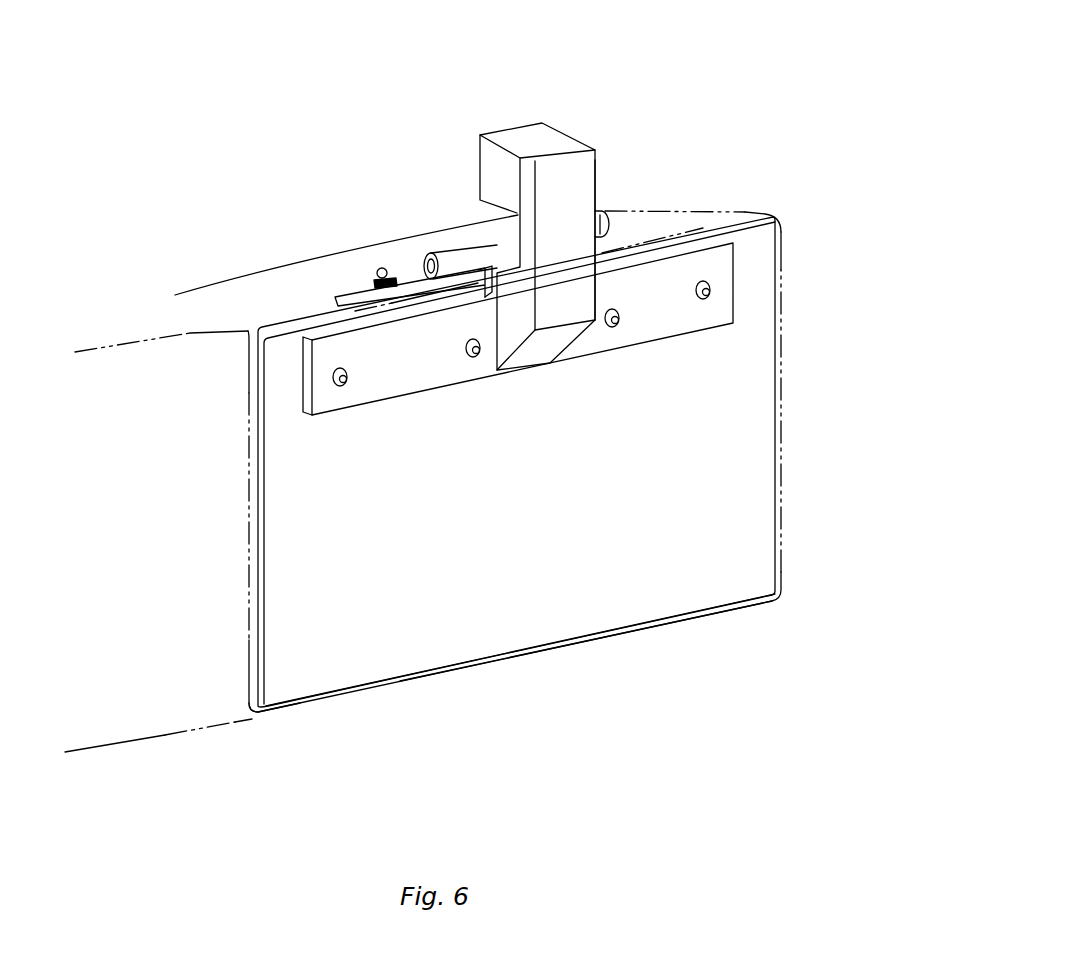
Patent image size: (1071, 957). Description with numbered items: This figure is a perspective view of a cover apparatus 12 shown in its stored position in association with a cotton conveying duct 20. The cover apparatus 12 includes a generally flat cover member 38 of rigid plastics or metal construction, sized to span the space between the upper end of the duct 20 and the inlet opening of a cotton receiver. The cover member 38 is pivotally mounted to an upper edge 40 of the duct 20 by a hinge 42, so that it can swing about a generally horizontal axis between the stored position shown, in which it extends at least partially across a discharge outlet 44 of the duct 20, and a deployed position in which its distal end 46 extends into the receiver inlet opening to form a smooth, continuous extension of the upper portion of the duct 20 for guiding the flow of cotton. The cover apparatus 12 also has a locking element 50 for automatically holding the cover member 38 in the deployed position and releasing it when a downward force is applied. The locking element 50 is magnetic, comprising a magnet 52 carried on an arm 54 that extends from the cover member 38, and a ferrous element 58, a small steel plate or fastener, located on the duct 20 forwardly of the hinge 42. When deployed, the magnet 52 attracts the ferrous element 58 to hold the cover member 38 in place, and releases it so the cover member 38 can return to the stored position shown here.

The cover apparatus 12 is at (800, 311).
The duct 20 is at (141, 746).
The cover member 38 is at (782, 490).
The upper edge 40 is at (292, 327).
The hinge 42 is at (612, 223).
The discharge outlet 44 is at (265, 658).
The distal end 46 is at (548, 646).
The locking element 50 is at (563, 201).
The magnet 52 is at (543, 122).
The arm 54 is at (597, 158).
The ferrous element 58 is at (349, 294).